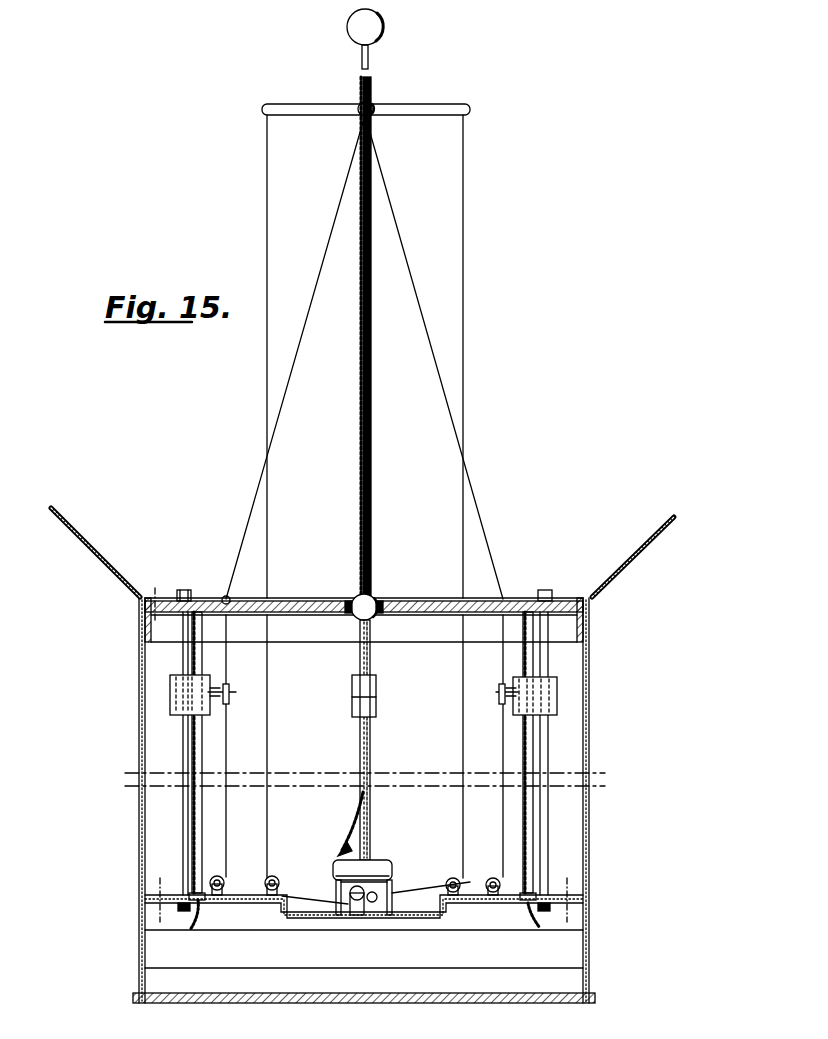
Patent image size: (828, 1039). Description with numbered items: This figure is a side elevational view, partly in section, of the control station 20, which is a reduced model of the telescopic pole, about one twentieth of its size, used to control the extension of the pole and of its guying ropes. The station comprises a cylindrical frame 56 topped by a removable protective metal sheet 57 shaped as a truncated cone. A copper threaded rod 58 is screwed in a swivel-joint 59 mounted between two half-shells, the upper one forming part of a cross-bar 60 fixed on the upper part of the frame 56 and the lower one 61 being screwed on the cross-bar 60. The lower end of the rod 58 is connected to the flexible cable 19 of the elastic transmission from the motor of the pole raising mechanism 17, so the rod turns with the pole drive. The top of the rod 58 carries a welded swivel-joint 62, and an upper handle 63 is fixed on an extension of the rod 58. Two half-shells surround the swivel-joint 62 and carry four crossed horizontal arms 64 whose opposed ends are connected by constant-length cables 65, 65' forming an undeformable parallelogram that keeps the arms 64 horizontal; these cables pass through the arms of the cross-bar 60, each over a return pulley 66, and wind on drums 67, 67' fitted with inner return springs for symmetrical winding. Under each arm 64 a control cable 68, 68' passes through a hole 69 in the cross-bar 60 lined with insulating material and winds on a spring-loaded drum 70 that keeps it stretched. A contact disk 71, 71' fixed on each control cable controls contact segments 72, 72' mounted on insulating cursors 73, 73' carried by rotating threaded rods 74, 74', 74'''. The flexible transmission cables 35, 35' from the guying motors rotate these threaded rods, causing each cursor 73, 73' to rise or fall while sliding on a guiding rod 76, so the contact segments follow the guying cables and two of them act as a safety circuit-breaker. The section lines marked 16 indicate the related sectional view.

The section line 16- 16 is at (155, 597).
The pole raising mechanism 17 is at (155, 663).
The flexible cable 19 is at (360, 739).
The control station 20 is at (132, 722).
The flexible cable 35 is at (203, 915).
The flexible cable 35' is at (523, 915).
The cylindrical frame 56 is at (593, 739).
The removable protective metal sheet 57 is at (643, 547).
The copper threaded rod 58 is at (372, 417).
The swivel-joint 59 is at (370, 601).
The cross-bar 60 is at (305, 603).
The lower half-shell 61 is at (378, 616).
The swivel-joint 62 is at (372, 108).
The upper handle 63 is at (347, 29).
The crossed horizontal arms 64 is at (300, 110).
The cable 65 is at (248, 496).
The cable 65' is at (487, 496).
The return pulley 66 is at (275, 884).
The drum 67 is at (371, 922).
The drum 67' is at (383, 881).
The control cable 68 is at (295, 357).
The control cable 68' is at (434, 357).
The hole 69 is at (224, 598).
The drum 70 is at (217, 878).
The contact disk 71 is at (243, 703).
The contact disk 71' is at (487, 703).
The contact segment 72 is at (233, 677).
The contact segment 72' is at (497, 674).
The cursor 73 is at (178, 695).
The cursor 73' is at (549, 713).
The rotating threaded rod 74 is at (221, 756).
The rotating threaded rod 74' is at (372, 756).
The rotating threaded rod 74''' is at (381, 824).
The guiding rod 76 is at (182, 831).